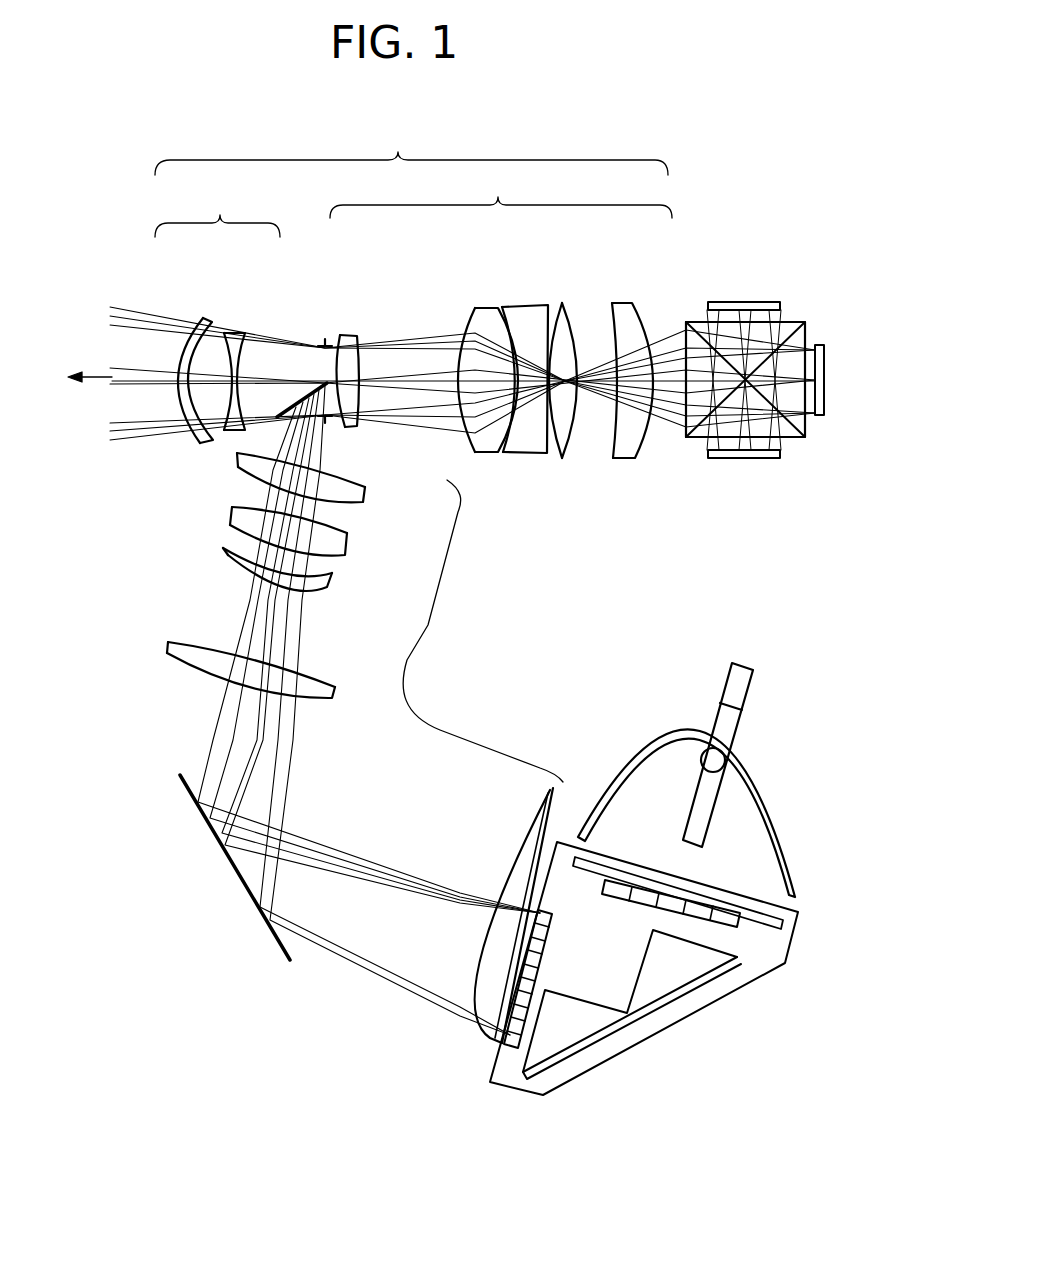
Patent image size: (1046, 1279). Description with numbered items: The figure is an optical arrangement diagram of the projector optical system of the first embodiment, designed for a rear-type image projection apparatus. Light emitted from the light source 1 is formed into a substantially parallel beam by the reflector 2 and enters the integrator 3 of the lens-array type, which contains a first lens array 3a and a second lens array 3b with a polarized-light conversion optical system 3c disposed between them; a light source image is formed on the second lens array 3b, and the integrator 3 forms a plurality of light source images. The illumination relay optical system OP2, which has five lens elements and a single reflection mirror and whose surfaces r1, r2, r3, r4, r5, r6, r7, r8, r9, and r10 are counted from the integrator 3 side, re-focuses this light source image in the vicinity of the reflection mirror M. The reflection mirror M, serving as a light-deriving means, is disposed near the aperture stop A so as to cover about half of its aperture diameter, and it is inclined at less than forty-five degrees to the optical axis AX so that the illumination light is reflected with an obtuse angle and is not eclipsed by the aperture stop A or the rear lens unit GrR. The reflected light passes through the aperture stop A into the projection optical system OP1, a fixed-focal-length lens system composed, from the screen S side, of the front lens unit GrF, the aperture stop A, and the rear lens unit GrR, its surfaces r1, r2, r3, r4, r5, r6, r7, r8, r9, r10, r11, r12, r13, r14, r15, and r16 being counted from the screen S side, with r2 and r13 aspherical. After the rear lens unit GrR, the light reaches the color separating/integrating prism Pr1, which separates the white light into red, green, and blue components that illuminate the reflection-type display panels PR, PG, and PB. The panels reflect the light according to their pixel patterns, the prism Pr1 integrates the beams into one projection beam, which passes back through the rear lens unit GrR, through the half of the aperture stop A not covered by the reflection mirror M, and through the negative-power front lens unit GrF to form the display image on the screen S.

The light source 1 is at (730, 748).
The reflector 2 is at (795, 803).
The integrator 3 is at (688, 1008).
The first lens array 3a is at (605, 886).
The second lens array 3b is at (553, 903).
The polarized-light conversion optical system 3c is at (577, 1022).
The first surface r1 is at (200, 322).
The second surface r2 is at (214, 330).
The third surface r3 is at (232, 333).
The fourth surface r4 is at (246, 333).
The fifth surface r5 is at (340, 335).
The sixth surface r6 is at (358, 338).
The seventh surface r7 is at (474, 312).
The eighth surface r8 is at (498, 310).
The ninth surface r9 is at (508, 305).
The tenth surface r10 is at (547, 308).
The eleventh surface r11 is at (562, 303).
The twelfth surface r12 is at (577, 312).
The thirteenth surface r13 is at (618, 303).
The fourteenth surface r14 is at (668, 287).
The fifteenth surface r15 is at (688, 322).
The sixteenth surface r16 is at (810, 322).
The aperture stop A is at (325, 342).
The reflection mirror M is at (282, 420).
The screen S is at (66, 392).
The optical axis AX is at (126, 384).
The projection optical system OP1 is at (411, 147).
The illumination relay optical system OP2 is at (483, 631).
The front lens unit GrF is at (217, 209).
The rear lens unit GrR is at (501, 194).
The reflection-type display panel PB is at (752, 302).
The reflection-type display panel PR is at (742, 458).
The reflection-type display panel PG is at (824, 345).
The color separating/integrating prism Pr1 is at (790, 440).